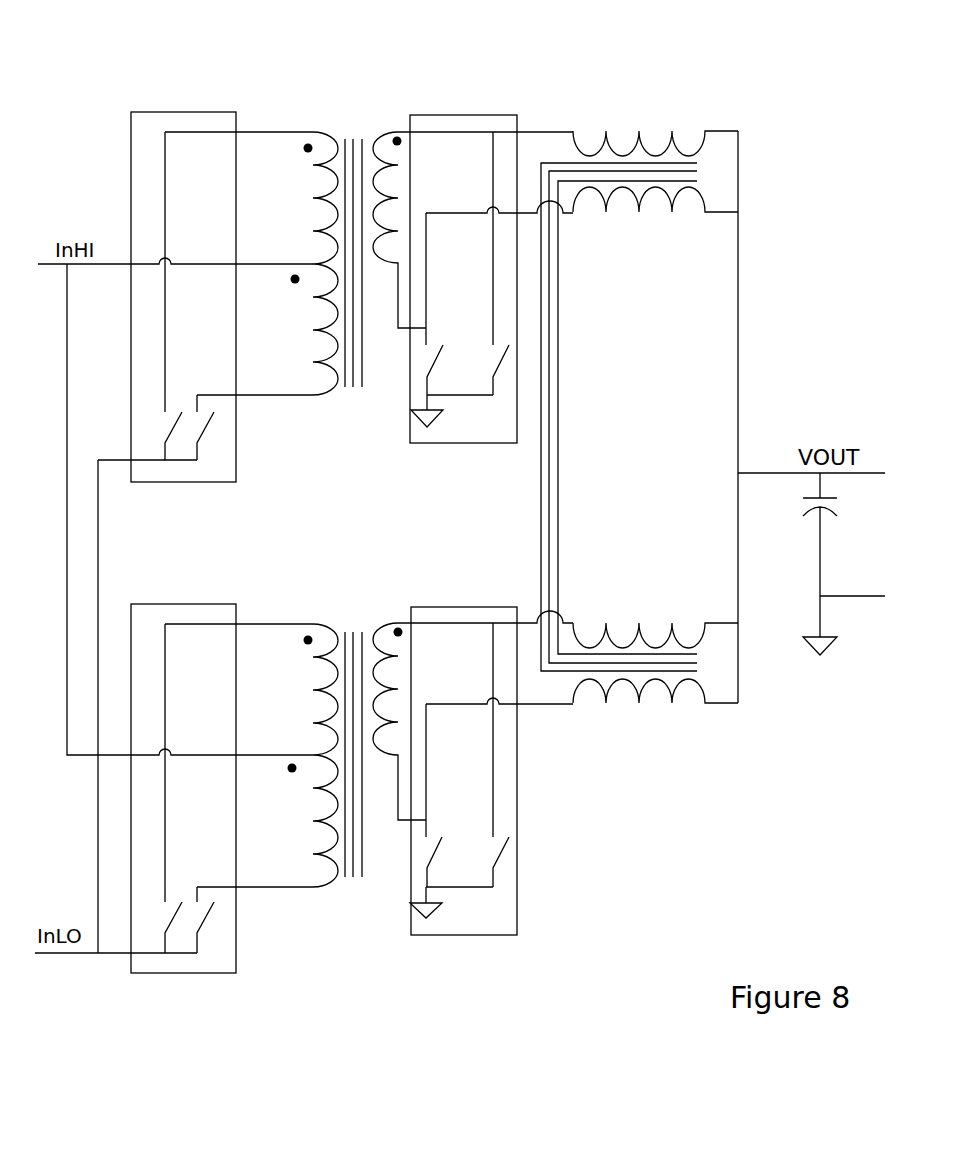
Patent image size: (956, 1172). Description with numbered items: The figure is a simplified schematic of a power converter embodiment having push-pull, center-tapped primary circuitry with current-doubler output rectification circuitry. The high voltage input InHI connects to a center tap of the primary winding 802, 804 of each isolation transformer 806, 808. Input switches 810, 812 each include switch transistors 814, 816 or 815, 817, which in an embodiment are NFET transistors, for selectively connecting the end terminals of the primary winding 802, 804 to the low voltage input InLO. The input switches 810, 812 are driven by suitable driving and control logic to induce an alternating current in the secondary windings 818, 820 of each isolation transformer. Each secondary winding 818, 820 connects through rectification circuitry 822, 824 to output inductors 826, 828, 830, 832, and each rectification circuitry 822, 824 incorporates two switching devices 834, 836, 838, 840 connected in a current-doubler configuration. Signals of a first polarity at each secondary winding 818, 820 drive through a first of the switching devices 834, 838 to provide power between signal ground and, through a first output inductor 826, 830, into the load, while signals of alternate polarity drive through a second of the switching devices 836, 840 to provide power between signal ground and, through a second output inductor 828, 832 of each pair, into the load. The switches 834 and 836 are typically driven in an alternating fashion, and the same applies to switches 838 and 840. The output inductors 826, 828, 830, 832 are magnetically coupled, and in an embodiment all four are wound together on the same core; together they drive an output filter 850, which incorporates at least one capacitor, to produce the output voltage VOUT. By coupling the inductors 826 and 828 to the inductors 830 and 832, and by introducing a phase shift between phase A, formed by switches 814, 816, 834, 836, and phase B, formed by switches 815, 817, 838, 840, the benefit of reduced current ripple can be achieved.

The primary winding 802 is at (328, 270).
The primary winding 804 is at (328, 760).
The isolation transformer 806 is at (353, 139).
The isolation transformer 808 is at (353, 632).
The input switch 810 is at (165, 112).
The input switch 812 is at (165, 604).
The switch transistor 814 is at (207, 430).
The switch transistor 815 is at (207, 927).
The switch transistor 816 is at (173, 440).
The switch transistor 817 is at (173, 935).
The secondary winding 818 is at (378, 752).
The secondary winding 820 is at (395, 195).
The rectification circuitry 822 is at (417, 446).
The rectification circuitry 824 is at (435, 605).
The output inductor 826 is at (607, 132).
The output inductor 828 is at (570, 212).
The output inductor 830 is at (607, 623).
The output inductor 832 is at (600, 697).
The switching device 834 is at (437, 357).
The switching device 836 is at (502, 365).
The switching device 838 is at (437, 853).
The switching device 840 is at (498, 862).
The output filter 850 is at (802, 508).